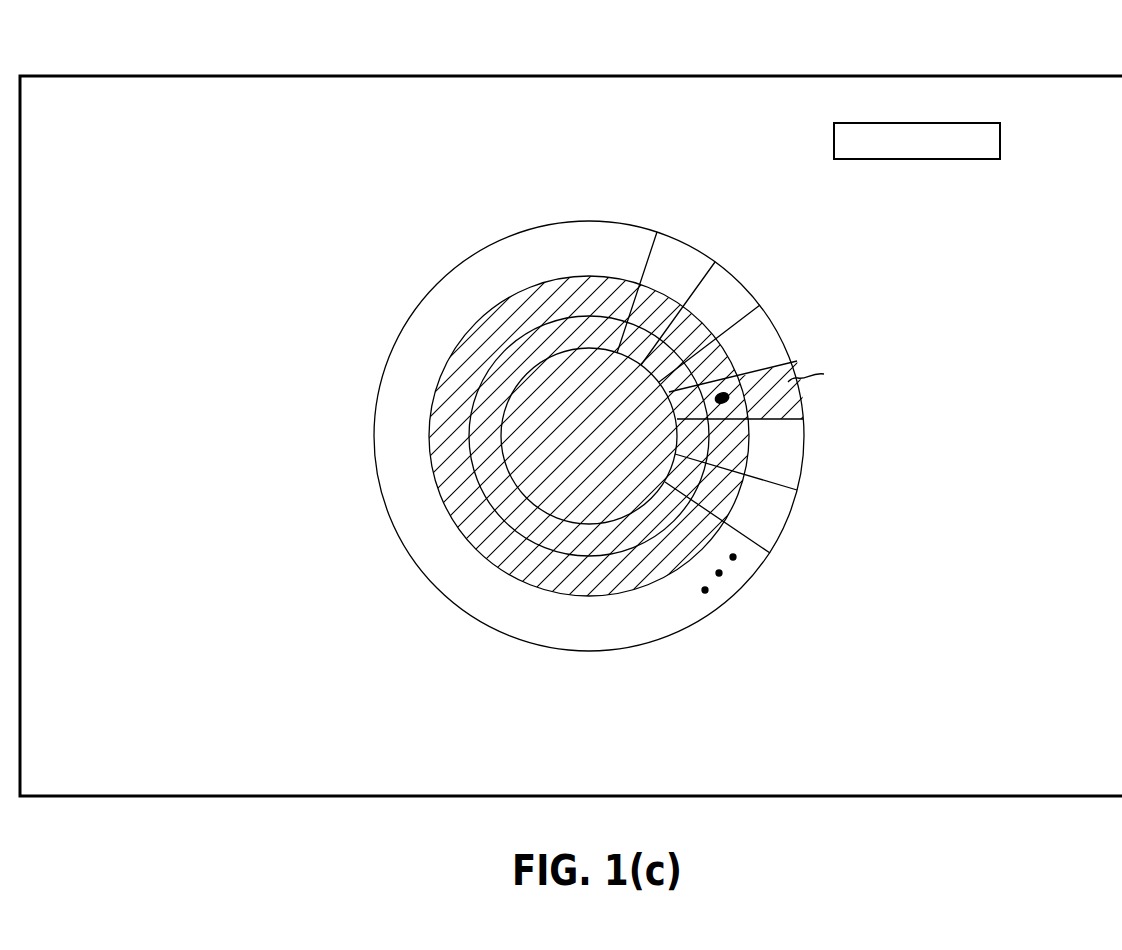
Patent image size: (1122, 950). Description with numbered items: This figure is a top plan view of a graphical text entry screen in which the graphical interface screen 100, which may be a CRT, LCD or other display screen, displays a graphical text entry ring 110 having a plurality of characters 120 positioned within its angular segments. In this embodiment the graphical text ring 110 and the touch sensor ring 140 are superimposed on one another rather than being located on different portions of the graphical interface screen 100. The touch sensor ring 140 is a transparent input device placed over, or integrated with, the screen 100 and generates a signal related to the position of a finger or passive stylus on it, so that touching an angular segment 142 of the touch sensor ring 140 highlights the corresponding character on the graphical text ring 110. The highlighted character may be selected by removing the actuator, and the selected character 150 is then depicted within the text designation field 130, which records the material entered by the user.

The graphical interface screen 100 is at (597, 76).
The graphical text entry ring 110 is at (494, 263).
The characters 120 is at (690, 262).
The text designation field 130 is at (1000, 140).
The touch sensor ring 140 is at (492, 332).
The angular segment 142 is at (728, 401).
The entered character 150 is at (856, 141).